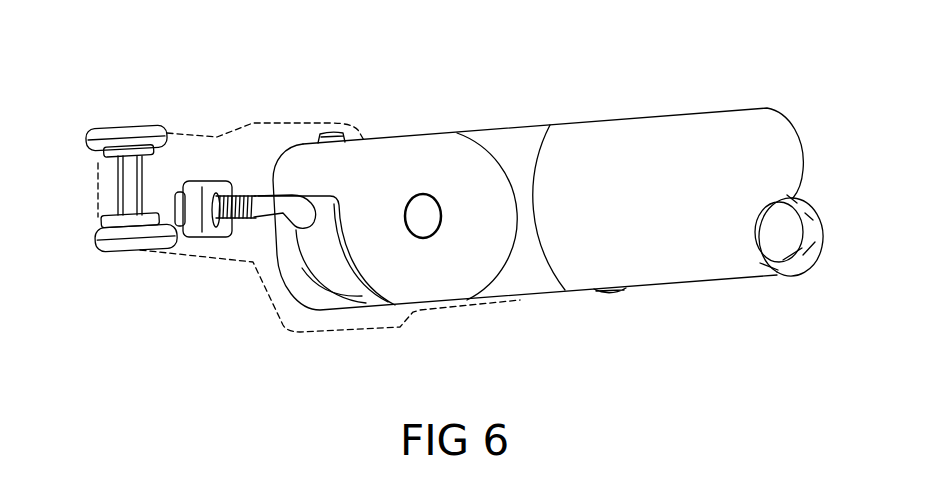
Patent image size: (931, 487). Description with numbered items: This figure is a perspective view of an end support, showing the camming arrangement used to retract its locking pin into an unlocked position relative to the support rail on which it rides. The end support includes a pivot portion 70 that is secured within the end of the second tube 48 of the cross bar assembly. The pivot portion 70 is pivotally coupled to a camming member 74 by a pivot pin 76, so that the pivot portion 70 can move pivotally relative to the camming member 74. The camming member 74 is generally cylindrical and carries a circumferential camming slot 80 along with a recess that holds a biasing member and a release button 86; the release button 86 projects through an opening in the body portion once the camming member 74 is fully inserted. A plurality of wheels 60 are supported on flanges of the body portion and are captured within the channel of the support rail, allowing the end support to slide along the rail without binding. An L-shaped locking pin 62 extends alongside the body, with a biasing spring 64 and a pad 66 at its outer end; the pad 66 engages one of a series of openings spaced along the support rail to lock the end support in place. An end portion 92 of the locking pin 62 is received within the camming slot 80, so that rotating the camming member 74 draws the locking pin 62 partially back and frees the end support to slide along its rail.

The second tube 48 is at (676, 270).
The wheels 60 is at (107, 133).
The locking pin 62 is at (296, 232).
The biasing spring 64 is at (247, 223).
The pad 66 is at (193, 190).
The pivot portion 70 is at (522, 128).
The camming member 74 is at (488, 118).
The pivot pin 76 is at (423, 207).
The camming slot 80 is at (332, 240).
The release button 86 is at (333, 130).
The end portion 92 is at (325, 245).